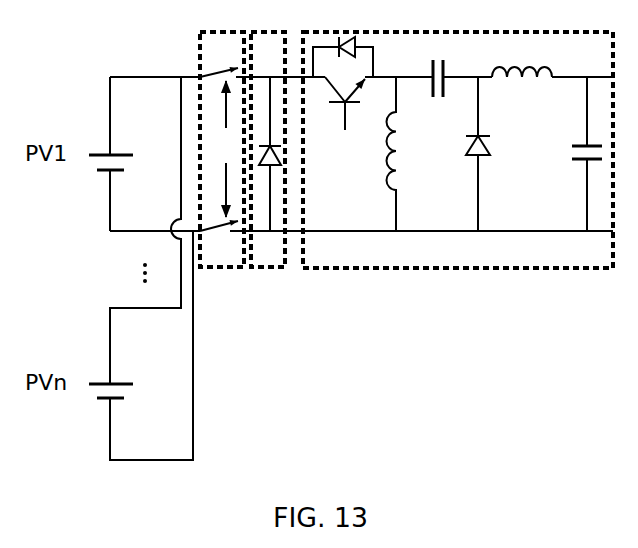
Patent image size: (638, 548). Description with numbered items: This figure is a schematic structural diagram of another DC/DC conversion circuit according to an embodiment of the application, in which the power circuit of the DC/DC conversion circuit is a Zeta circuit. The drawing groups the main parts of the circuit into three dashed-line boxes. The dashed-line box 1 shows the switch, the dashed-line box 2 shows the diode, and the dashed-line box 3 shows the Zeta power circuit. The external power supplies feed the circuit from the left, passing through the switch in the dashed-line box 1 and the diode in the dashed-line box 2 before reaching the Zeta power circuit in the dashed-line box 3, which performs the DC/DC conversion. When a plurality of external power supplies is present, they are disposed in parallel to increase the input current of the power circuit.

The dashed-line box showing the switch 1 is at (215, 268).
The dashed-line box showing the diode 2 is at (262, 268).
The dashed-line box showing the Zeta power circuit 3 is at (410, 270).